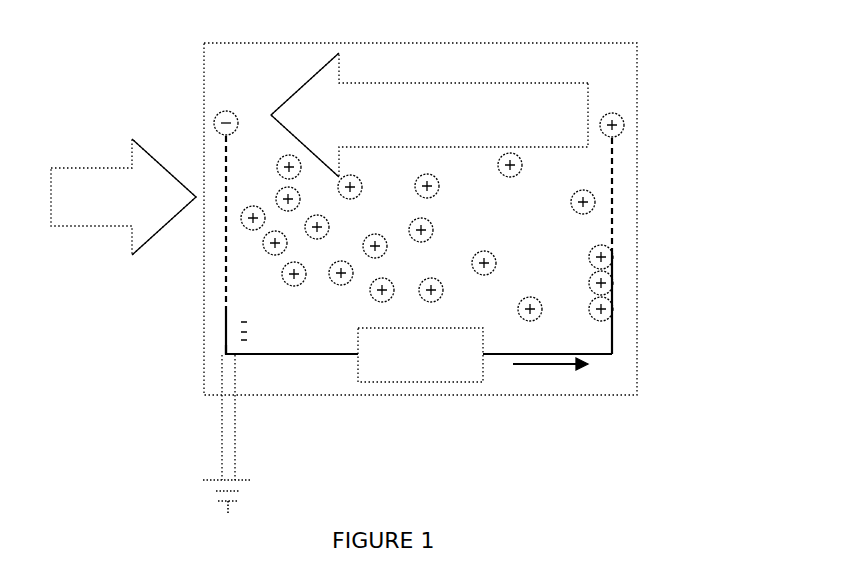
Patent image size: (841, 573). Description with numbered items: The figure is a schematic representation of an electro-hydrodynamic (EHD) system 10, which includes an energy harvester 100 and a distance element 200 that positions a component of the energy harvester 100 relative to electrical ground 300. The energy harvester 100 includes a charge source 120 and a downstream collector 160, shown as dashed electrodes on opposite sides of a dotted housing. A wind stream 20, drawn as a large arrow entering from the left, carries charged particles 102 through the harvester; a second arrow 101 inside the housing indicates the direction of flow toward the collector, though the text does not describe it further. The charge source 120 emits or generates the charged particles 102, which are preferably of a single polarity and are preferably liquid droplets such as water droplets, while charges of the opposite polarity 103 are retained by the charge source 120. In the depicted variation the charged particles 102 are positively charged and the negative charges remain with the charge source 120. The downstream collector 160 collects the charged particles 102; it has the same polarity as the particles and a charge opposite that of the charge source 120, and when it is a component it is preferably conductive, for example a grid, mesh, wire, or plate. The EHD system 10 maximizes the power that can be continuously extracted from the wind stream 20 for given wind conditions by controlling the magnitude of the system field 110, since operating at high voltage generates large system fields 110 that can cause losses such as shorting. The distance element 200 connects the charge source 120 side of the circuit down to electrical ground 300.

The electro-hydrodynamic (EHD) system 10 is at (158, 63).
The energy harvester 100 is at (420, 206).
The wind stream 20 is at (123, 197).
The gas flow direction through chamber 101 is at (429, 115).
The charged particles 102 is at (433, 229).
The downstream collector 160 is at (615, 192).
The charge source 120 is at (227, 286).
The charges of the opposite polarity 103 is at (227, 350).
The system field 110 is at (419, 361).
The distance element 200 is at (210, 418).
The electrical ground 300 is at (193, 486).